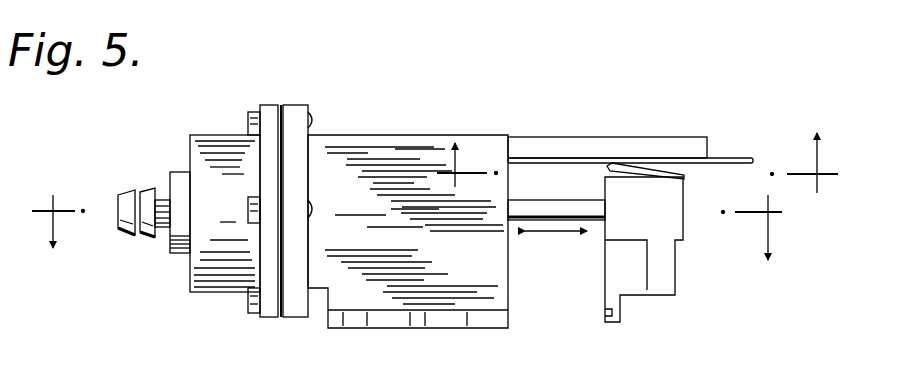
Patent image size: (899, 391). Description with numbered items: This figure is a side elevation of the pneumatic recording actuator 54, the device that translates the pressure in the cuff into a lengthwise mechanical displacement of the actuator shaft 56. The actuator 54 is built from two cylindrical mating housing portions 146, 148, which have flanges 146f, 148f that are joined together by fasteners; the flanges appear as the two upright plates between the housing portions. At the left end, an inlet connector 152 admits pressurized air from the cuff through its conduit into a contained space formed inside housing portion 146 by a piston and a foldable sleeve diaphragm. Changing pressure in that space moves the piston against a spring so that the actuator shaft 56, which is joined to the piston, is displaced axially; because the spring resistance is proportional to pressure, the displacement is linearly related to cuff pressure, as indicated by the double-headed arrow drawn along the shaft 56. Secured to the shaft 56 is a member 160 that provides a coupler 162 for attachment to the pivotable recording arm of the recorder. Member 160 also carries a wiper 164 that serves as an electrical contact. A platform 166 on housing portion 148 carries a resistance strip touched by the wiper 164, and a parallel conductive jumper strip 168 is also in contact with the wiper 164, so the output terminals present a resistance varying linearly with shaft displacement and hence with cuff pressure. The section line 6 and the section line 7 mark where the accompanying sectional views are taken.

The pneumatic recording actuator 54 is at (250, 78).
The actuator shaft 56 is at (523, 235).
The housing portion 146 is at (196, 135).
The flange of housing portion 146 146f is at (268, 105).
The housing portion 148 is at (393, 133).
The flange of housing portion 148 148f is at (297, 105).
The inlet connector 152 is at (122, 194).
The member 160 is at (678, 223).
The coupler 162 is at (608, 318).
The wiper 164 is at (643, 167).
The platform 166 is at (583, 137).
The conductive jumper strip 168 is at (733, 157).
The section line 6— 6 is at (410, 242).
The section line 7— 7 is at (640, 153).